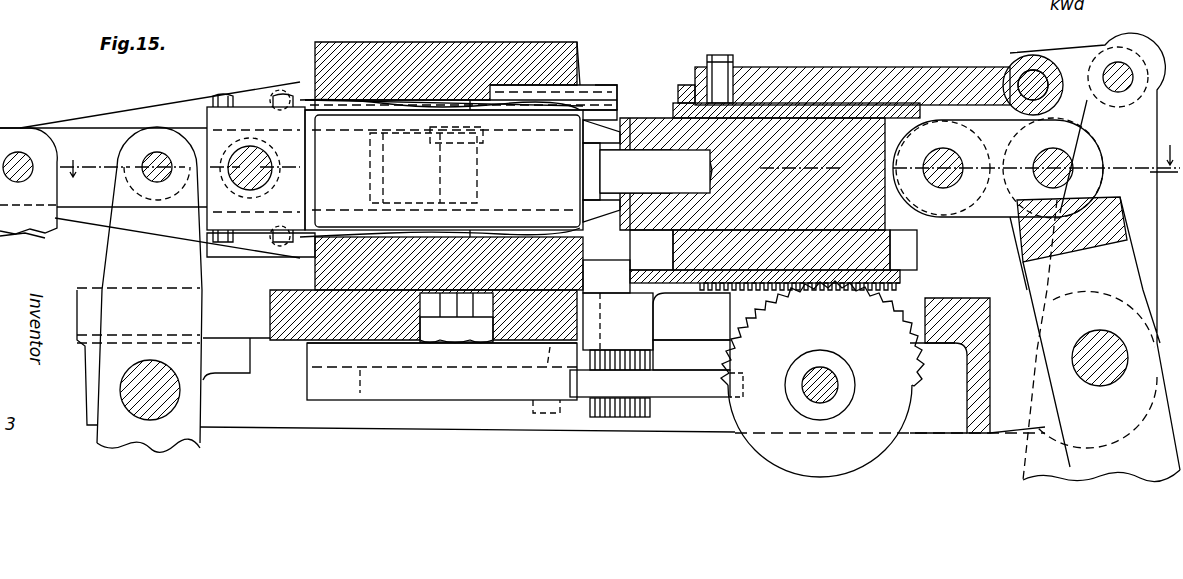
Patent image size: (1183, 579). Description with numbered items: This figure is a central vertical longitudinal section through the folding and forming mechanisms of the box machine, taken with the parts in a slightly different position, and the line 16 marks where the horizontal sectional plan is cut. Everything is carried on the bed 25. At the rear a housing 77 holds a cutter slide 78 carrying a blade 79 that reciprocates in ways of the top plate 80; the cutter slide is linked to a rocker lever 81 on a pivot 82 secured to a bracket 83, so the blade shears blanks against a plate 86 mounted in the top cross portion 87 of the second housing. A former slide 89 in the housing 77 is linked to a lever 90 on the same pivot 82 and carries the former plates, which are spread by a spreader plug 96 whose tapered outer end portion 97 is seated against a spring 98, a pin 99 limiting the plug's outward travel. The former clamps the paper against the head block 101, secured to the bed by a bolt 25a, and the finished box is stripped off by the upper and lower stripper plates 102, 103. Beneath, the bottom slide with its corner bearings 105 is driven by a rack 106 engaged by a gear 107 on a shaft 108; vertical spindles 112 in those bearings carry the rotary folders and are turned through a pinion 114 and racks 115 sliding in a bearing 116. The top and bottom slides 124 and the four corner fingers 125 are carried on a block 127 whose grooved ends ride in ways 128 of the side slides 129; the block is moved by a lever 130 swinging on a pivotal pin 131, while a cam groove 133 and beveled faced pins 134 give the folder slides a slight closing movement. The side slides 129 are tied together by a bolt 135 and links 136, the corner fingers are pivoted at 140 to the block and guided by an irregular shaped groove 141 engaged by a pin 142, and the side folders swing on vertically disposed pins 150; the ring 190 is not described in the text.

The section line 16 is at (624, 173).
The bed 25 is at (397, 290).
The bolt 25a is at (420, 343).
The housing 77 is at (915, 265).
The cutter slide 78 is at (800, 67).
The blade 79 is at (677, 92).
The top plate 80 is at (900, 72).
The rocker lever 81 is at (1036, 251).
The pivot 82 is at (1097, 347).
The bracket 83 is at (964, 365).
The plate 86 is at (615, 50).
The top cross portion 87 is at (400, 47).
The former slide 89 is at (912, 232).
The lever 90 is at (1017, 247).
The spreader plug 96 is at (647, 171).
The tapered outer end portion 97 is at (590, 167).
The spring 98 is at (773, 83).
The pin 99 is at (590, 157).
The head block 101 is at (444, 170).
The upper stripper plate 102 is at (643, 107).
The lower stripper plate 103 is at (672, 296).
The corner bearings 105 is at (640, 305).
The rack 106 is at (720, 345).
The gear 107 is at (883, 379).
The shaft 108 is at (838, 387).
The vertical spindles 112 is at (630, 262).
The pinion 114 is at (612, 418).
The racks 115 is at (656, 383).
The bearing 116 is at (442, 378).
The top and bottom slides 124 is at (510, 233).
The corner fingers 125 is at (297, 250).
The block 127 is at (295, 188).
The ways 128 is at (103, 167).
The side slides 129 is at (123, 108).
The lever 130 is at (173, 285).
The pivotal pin 131 is at (160, 405).
The cam groove 133 is at (530, 93).
The beveled faced pins 134 is at (580, 93).
The bolt 135 is at (15, 150).
The links 136 is at (37, 230).
The pivotal connection 140 is at (297, 213).
The irregular shaped groove 141 is at (433, 40).
The pin 142 is at (470, 220).
The vertically disposed pins 150 is at (390, 150).
The ring fastener 190 is at (272, 102).